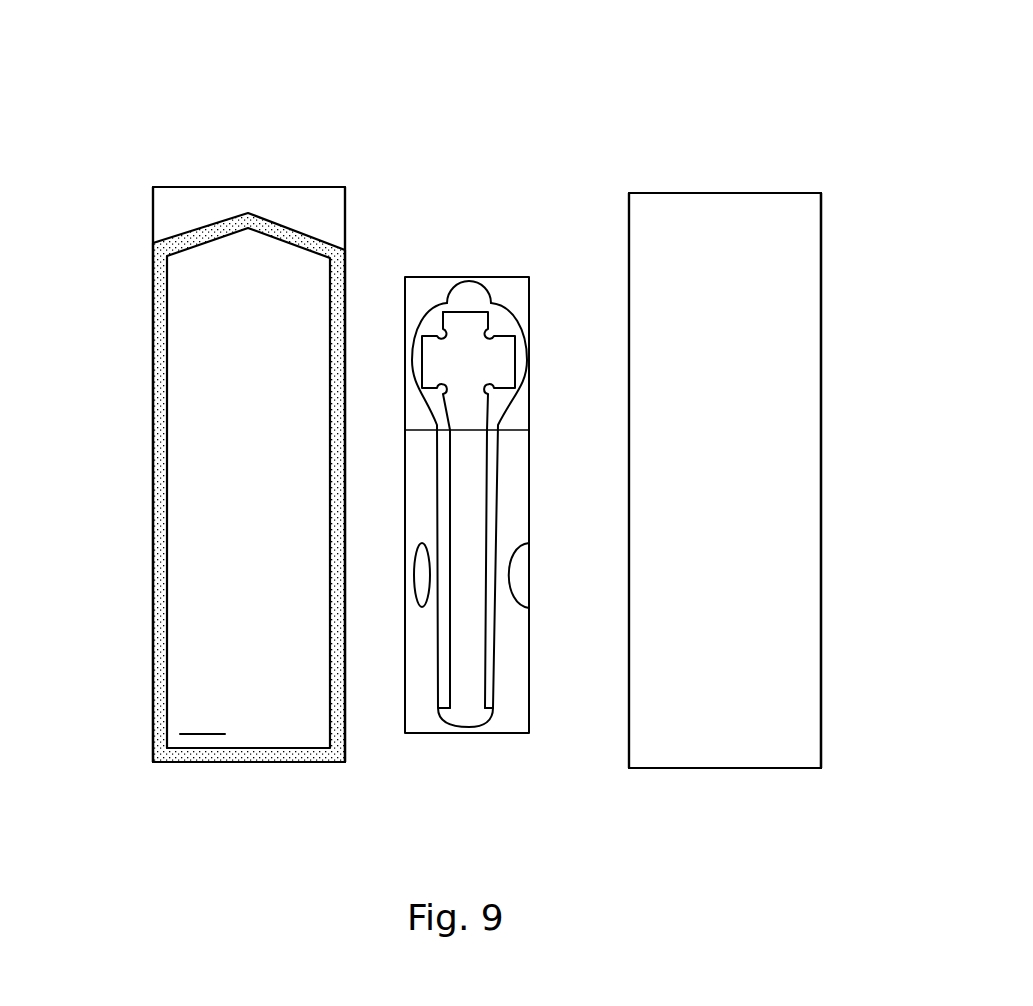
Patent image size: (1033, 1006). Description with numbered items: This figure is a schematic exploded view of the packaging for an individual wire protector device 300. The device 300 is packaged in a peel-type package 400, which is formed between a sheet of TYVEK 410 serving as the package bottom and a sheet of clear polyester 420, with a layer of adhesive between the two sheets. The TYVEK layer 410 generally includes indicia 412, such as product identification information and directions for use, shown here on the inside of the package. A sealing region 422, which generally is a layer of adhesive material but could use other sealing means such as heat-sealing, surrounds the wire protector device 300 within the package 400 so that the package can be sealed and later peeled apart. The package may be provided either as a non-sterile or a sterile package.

The peel-type package 400 is at (621, 165).
The sheet of clear polyester 420 is at (188, 207).
The sealing region 422 is at (167, 388).
The wire protector device 300 is at (478, 258).
The sheet of TYVEK 410 is at (694, 230).
The indicia 412 is at (787, 404).